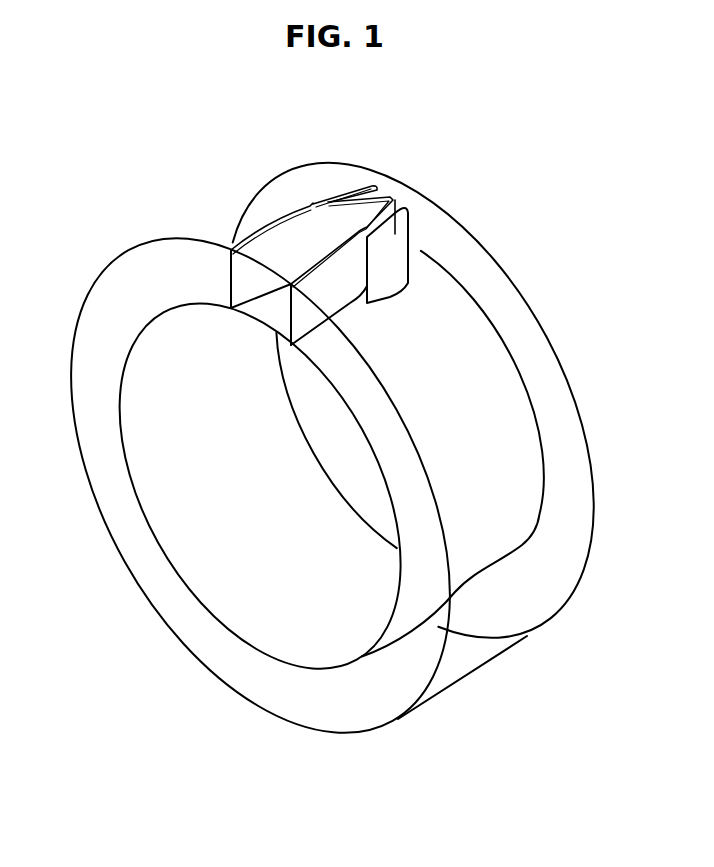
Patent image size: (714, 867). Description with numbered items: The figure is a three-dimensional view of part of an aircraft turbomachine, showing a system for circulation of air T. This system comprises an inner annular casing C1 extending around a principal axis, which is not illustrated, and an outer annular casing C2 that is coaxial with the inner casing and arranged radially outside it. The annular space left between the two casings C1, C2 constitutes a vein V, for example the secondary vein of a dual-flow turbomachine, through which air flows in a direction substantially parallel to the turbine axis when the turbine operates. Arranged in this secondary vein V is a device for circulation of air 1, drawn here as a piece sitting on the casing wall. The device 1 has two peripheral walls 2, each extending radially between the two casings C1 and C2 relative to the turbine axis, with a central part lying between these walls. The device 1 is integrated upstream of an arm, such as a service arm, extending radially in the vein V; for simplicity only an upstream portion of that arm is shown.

The device for circulation of air 1 is at (272, 201).
The peripheral walls 2 is at (331, 184).
The system for circulation of air T is at (306, 485).
The vein V is at (110, 361).
The inner annular casing C1 is at (150, 527).
The outer annular casing C2 is at (350, 733).